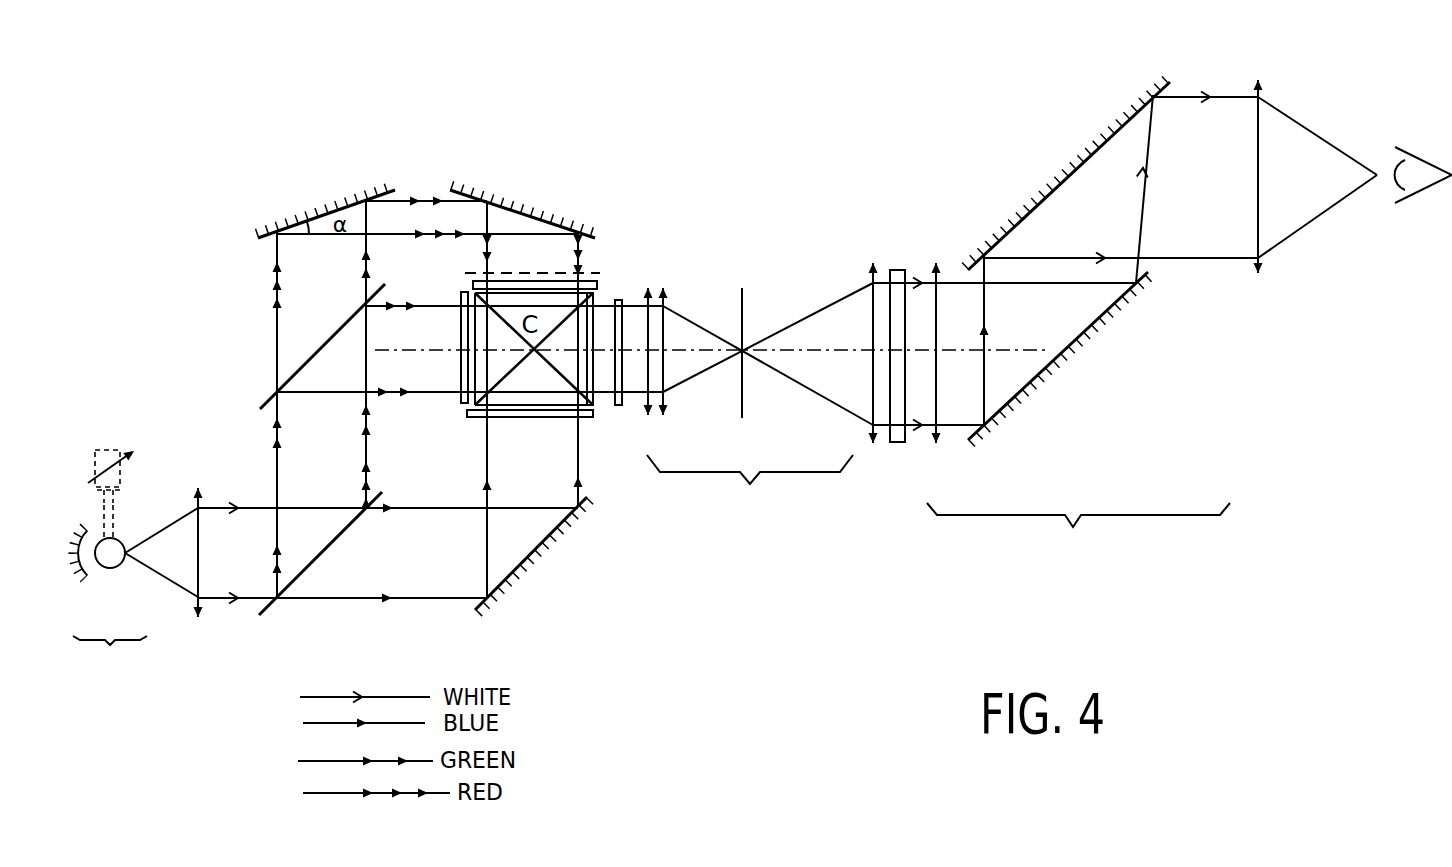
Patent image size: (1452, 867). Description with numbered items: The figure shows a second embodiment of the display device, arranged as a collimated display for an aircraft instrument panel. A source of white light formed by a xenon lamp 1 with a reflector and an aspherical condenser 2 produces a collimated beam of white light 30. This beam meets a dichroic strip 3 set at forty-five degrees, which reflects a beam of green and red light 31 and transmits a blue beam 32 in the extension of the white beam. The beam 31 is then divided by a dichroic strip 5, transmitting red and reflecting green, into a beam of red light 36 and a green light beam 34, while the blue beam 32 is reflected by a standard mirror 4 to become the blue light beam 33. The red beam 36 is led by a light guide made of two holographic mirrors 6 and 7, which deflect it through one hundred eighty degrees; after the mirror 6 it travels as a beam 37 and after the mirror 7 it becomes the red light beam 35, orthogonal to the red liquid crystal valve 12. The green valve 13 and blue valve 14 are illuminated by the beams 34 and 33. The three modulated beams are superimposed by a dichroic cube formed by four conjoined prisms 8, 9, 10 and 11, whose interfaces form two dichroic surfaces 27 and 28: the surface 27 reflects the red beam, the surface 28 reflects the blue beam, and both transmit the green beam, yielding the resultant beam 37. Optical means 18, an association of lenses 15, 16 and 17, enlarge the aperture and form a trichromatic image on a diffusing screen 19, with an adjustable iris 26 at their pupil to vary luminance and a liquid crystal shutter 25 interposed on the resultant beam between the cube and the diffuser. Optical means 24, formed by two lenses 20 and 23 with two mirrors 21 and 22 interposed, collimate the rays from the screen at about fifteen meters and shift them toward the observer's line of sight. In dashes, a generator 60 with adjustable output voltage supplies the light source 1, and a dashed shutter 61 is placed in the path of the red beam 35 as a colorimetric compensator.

The xenon lamp 1 is at (135, 591).
The aspherical condenser 2 is at (200, 603).
The dichroic strip 3 is at (283, 600).
The standard mirror 4 is at (565, 538).
The dichroic strip 5 is at (266, 400).
The holographic mirror 6 is at (333, 210).
The holographic mirror 7 is at (516, 203).
The prism 8 is at (496, 273).
The prism 9 is at (474, 368).
The prism 10 is at (496, 417).
The prism 11 is at (600, 300).
The liquid crystal valve 12 is at (533, 282).
The liquid crystal valve 13 is at (460, 295).
The liquid crystal valve 14 is at (545, 417).
The lens 15 is at (652, 418).
The lens 16 is at (668, 408).
The lens 17 is at (870, 436).
The optical means 18 is at (750, 486).
The diffusing screen 19 is at (896, 442).
The lens 20 is at (936, 444).
The mirror 21 is at (1020, 396).
The mirror 22 is at (1092, 152).
The lens 23 is at (1256, 280).
The optical means 24 is at (1073, 528).
The liquid crystal shutter 25 is at (623, 299).
The adjustable iris 26 is at (742, 288).
The dichroic surface 27 is at (460, 322).
The dichroic surface 28 is at (466, 398).
The beam of white light 30 is at (292, 508).
The beam of green and red light 31 is at (367, 448).
The blue beam 32 is at (410, 513).
The blue light beam 33 is at (485, 442).
The green light beam 34 is at (392, 305).
The red light beam 35 is at (582, 258).
The beam of red light 36 is at (277, 340).
The resultant beam 37 is at (433, 202).
The generator 60 is at (120, 468).
The green beam 61 is at (474, 270).